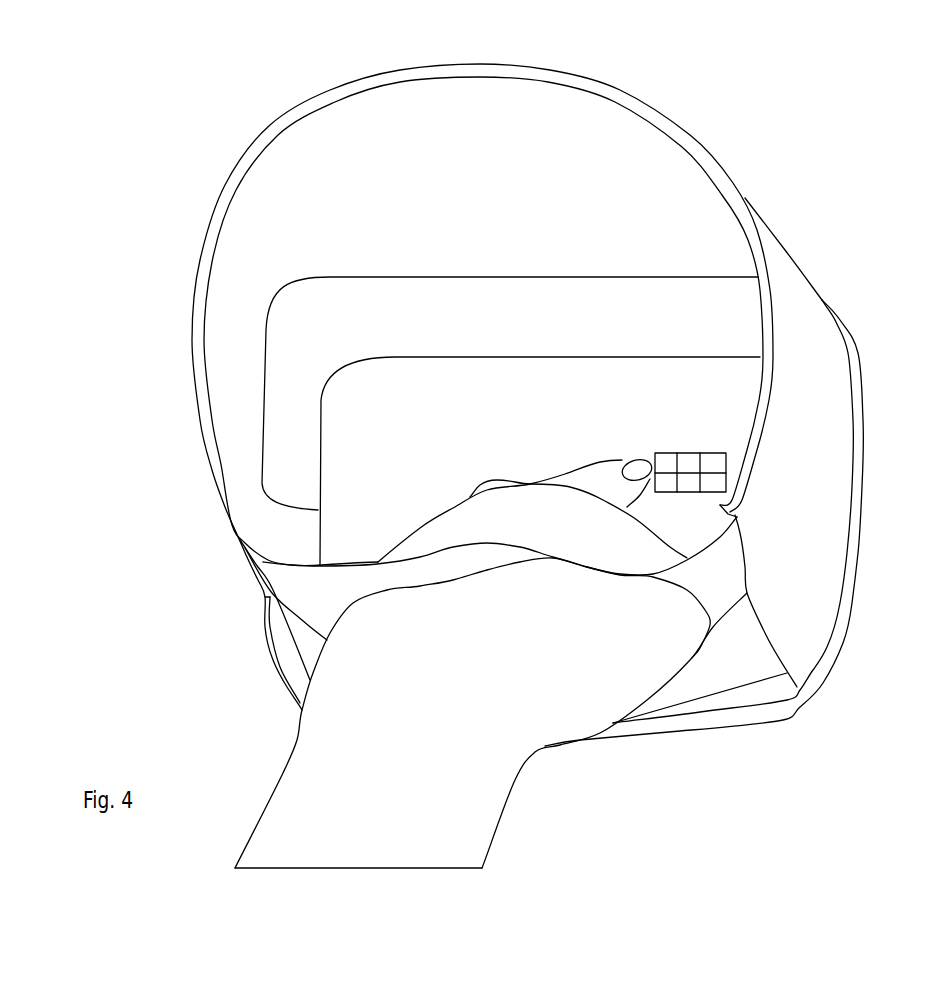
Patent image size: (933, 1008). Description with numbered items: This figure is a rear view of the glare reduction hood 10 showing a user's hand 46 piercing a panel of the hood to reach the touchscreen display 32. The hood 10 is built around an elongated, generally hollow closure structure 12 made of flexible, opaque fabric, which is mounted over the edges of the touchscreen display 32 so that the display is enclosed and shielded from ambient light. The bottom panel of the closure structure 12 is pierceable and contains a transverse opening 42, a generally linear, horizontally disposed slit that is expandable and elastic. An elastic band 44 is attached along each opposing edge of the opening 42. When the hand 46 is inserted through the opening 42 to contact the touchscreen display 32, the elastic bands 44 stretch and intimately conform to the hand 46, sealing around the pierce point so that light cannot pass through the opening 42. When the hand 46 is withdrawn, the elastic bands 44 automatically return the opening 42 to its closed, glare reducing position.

The glare reduction hood 10 is at (792, 137).
The closure structure 12 is at (797, 262).
The touchscreen display 32 is at (720, 355).
The transverse opening 42 is at (740, 592).
The elastic band 44 is at (490, 500).
The hand 46 is at (372, 635).